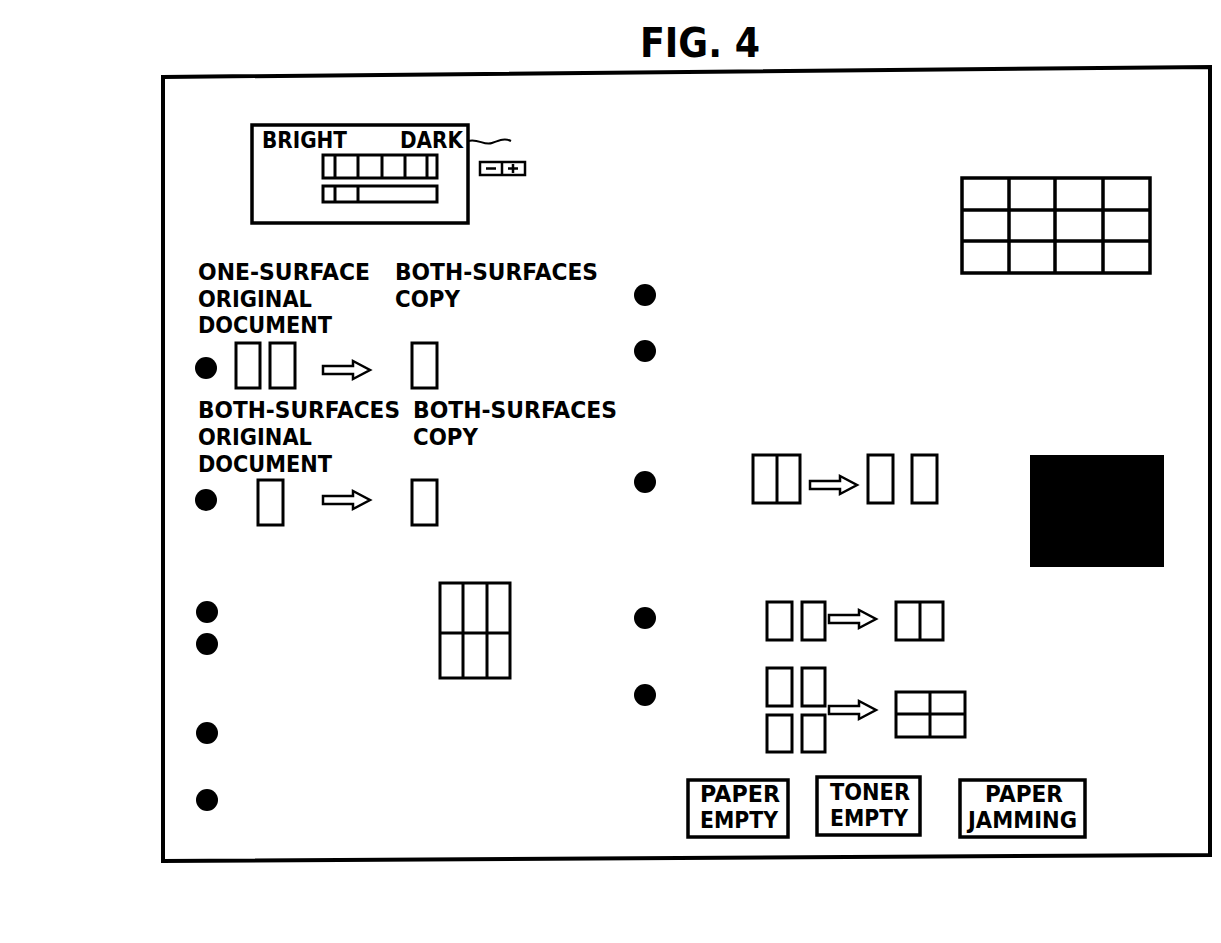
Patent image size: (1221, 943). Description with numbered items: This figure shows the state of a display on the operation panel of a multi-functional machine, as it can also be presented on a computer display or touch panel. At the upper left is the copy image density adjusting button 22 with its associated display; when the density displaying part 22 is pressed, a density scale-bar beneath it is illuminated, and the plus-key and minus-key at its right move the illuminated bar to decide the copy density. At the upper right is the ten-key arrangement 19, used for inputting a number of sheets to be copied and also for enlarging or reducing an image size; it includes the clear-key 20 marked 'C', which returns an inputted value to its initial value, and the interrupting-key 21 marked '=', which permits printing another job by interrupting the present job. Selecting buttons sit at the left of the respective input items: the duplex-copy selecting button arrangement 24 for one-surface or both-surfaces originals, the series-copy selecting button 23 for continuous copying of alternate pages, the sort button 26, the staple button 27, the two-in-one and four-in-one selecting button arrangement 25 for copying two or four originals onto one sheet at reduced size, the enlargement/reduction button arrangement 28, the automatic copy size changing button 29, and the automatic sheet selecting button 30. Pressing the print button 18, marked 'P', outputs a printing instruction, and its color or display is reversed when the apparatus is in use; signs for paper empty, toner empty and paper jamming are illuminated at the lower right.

The print button 18 is at (1098, 448).
The ten-key arrangement 19 is at (1080, 196).
The clear-key 20 is at (1140, 222).
The interrupting-key 21 is at (1138, 191).
The copy image density adjusting button 22 is at (512, 162).
The series-copy selecting button 23 is at (638, 472).
The duplex-copy selecting button arrangement 24 is at (198, 501).
The 2-in-1 and 4-in-1 selecting button arrangement 25 is at (645, 684).
The sort button 26 is at (648, 284).
The staple button 27 is at (636, 343).
The copy size changing (enlargement/reduction) button arrangement 28 is at (196, 645).
The automatic copy size changing button 29 is at (196, 734).
The automatic sheet selecting button 30 is at (196, 802).